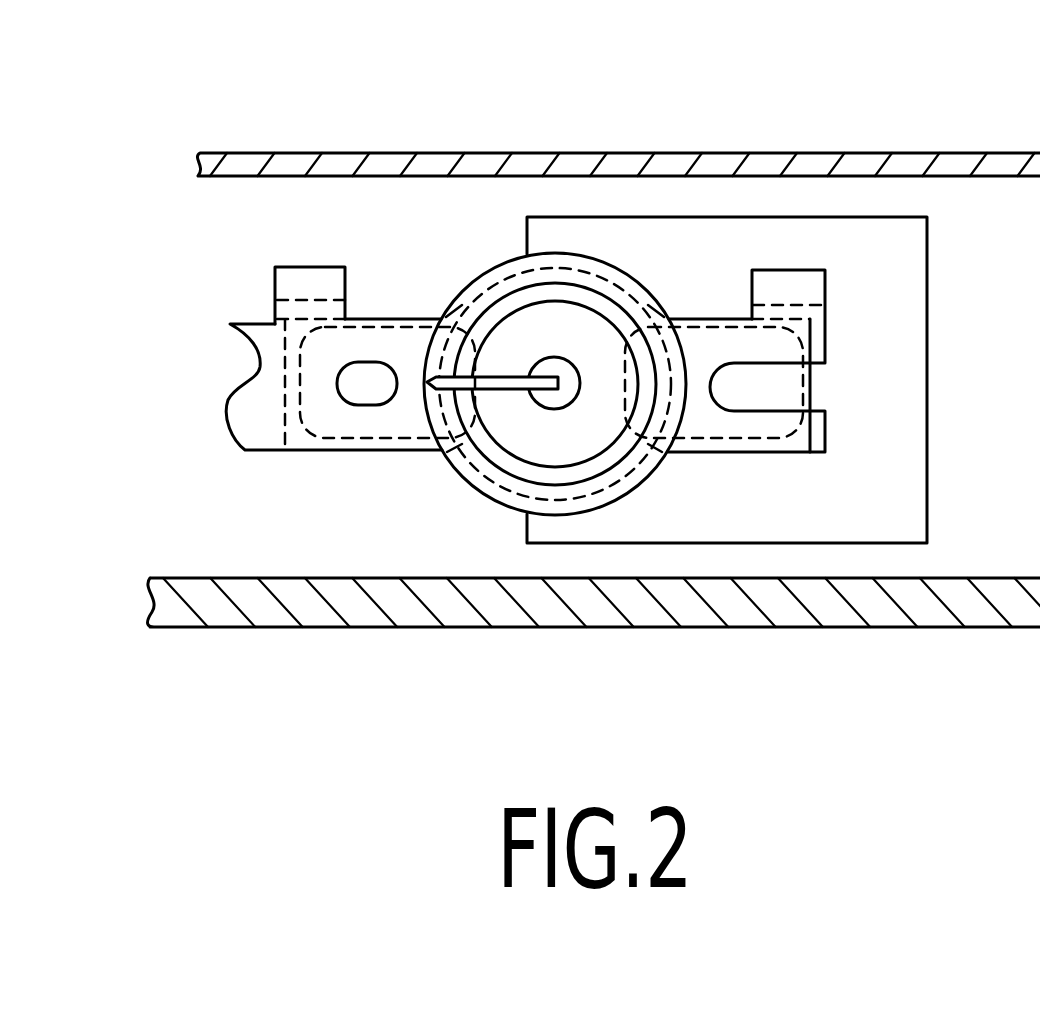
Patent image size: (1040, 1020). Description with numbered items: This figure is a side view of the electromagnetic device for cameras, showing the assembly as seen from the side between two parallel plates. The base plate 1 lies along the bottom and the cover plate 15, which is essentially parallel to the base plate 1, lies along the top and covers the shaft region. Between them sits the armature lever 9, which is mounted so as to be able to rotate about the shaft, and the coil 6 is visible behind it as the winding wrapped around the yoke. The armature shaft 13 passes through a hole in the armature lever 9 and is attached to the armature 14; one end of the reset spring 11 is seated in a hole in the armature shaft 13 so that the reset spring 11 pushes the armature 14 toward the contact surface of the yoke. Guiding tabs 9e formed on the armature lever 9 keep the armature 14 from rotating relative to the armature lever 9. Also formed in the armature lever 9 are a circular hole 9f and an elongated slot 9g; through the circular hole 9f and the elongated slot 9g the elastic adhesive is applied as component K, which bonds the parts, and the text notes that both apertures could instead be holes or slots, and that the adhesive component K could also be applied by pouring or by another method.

The base plate 1 is at (978, 620).
The coil 6 is at (915, 498).
The armature lever 9 is at (262, 436).
The guiding tabs 9e is at (287, 283).
The circular hole 9f is at (368, 367).
The elongated slot 9g is at (773, 408).
The reset spring 11 is at (476, 378).
The armature shaft 13 is at (490, 432).
The armature 14 is at (810, 378).
The cover plate 15 is at (920, 157).
The elastic adhesive component K is at (302, 358).